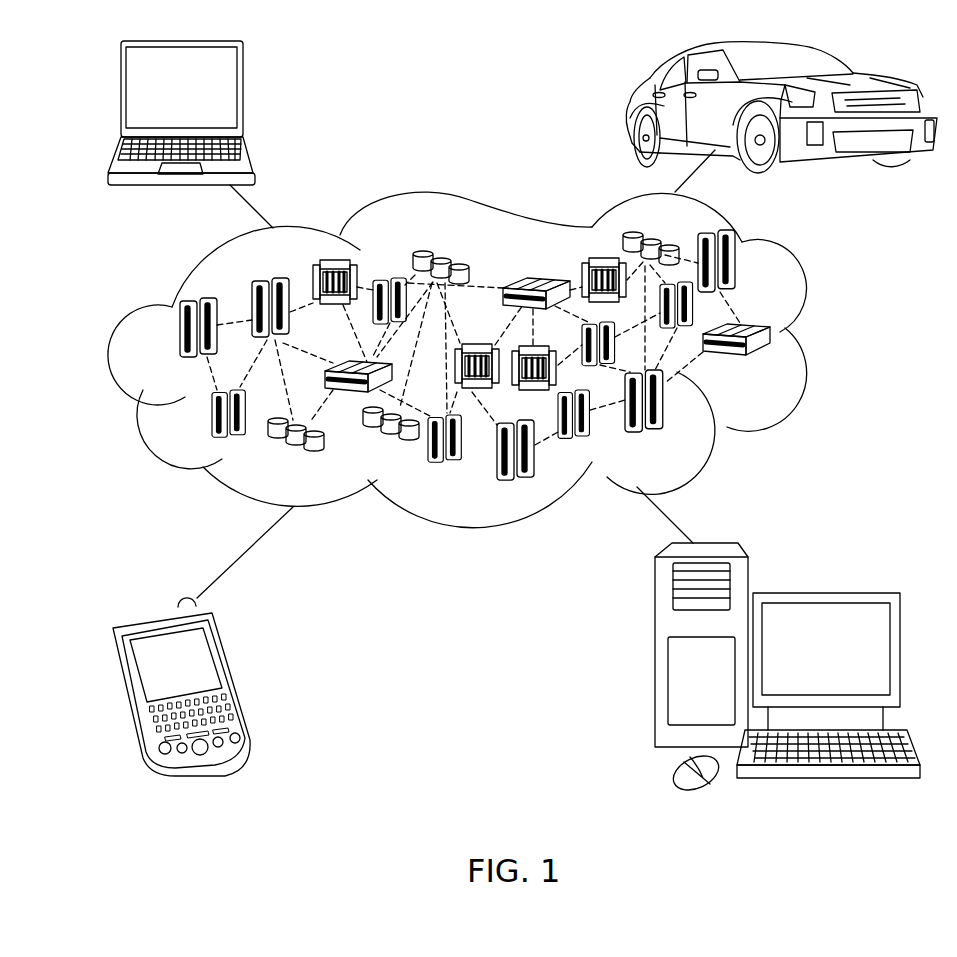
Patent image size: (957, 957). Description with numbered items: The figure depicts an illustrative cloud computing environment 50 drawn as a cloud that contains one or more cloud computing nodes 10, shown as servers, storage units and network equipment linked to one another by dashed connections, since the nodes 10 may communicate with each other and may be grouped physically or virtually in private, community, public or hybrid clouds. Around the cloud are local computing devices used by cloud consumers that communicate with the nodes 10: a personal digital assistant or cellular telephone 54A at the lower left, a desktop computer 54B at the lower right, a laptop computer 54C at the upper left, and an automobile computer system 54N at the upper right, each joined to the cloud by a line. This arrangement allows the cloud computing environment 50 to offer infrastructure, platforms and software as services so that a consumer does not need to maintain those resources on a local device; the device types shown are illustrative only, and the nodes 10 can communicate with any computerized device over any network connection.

The laptop computer 54C is at (243, 96).
The automobile computer system 54N is at (630, 107).
The cloud computing environment 50 is at (822, 337).
The cloud computing node 10 is at (773, 363).
The personal digital assistant or cellular telephone 54A is at (233, 676).
The desktop computer 54B is at (823, 593).